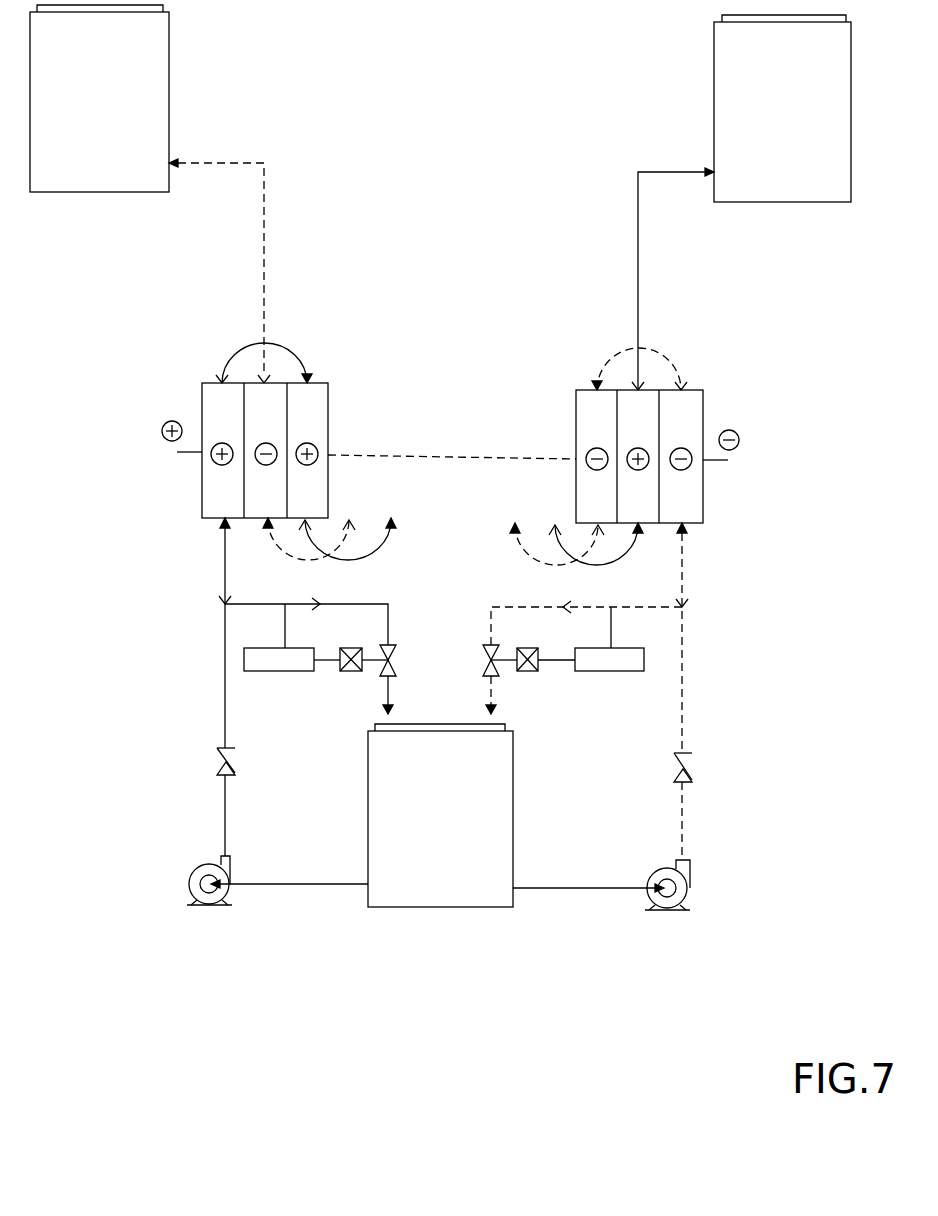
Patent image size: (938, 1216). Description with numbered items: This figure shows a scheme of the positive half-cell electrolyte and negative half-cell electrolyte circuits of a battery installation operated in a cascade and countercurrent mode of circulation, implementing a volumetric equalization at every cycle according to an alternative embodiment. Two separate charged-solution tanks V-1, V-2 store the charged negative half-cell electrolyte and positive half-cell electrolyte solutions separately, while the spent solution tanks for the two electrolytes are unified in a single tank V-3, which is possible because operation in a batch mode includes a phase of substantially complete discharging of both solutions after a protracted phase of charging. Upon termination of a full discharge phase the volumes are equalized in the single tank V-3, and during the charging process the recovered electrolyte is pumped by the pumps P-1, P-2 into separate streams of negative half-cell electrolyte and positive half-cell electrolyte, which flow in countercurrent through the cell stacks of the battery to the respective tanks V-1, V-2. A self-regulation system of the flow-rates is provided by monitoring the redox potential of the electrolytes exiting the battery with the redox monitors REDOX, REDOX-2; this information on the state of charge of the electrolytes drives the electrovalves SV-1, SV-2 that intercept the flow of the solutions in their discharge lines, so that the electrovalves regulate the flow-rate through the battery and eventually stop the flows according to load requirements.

The first electrolyte storage vessel V-1 is at (99, 98).
The second electrolyte storage vessel V-2 is at (782, 108).
The third storage vessel (reservoir) V-3 is at (440, 815).
The first pump P-1 is at (232, 877).
The second pump P-2 is at (651, 885).
The first solenoid valve SV-1 is at (404, 650).
The second solenoid valve SV-2 is at (471, 670).
The redox potential sensor/controller REDOX is at (316, 659).
The redox potential sensor/controller (second) REDOX-2 is at (567, 659).